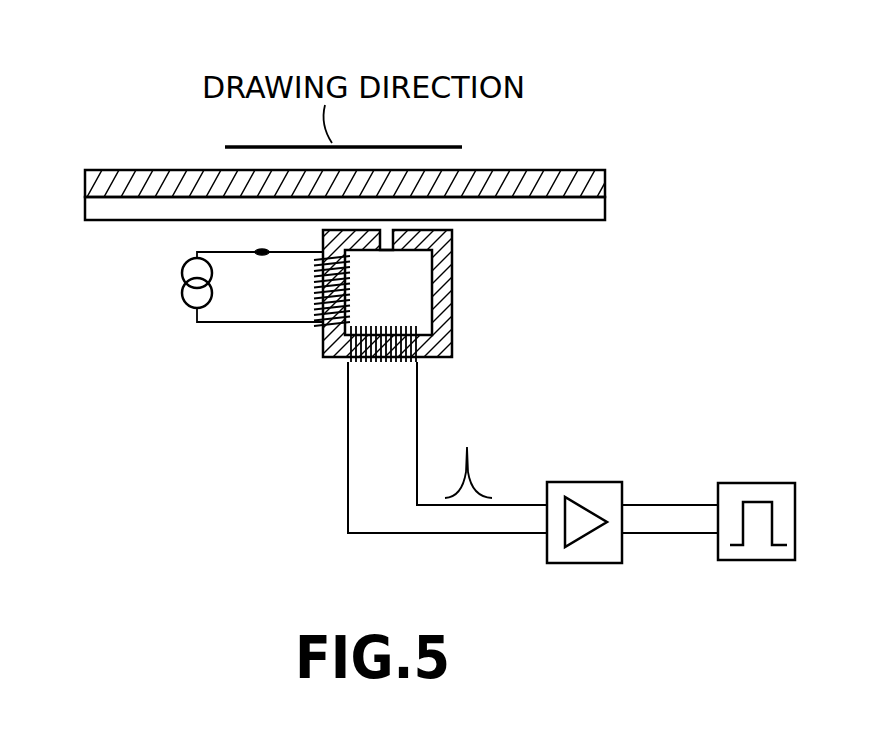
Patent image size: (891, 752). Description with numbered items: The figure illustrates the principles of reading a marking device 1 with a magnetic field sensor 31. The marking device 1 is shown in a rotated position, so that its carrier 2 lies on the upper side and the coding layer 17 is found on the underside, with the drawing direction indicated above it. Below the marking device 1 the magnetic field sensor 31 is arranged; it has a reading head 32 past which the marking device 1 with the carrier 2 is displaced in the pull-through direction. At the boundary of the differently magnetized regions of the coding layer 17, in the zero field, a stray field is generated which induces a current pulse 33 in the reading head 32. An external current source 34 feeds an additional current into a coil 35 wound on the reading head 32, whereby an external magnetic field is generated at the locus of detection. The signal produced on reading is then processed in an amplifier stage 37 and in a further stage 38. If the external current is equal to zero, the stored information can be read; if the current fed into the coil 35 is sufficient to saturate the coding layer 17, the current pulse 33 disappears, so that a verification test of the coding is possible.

The marking device 1 is at (597, 157).
The carrier 2 is at (607, 182).
The coding layer 17 is at (608, 208).
The magnetic field sensor 31 is at (615, 355).
The reading head 32 is at (452, 296).
The current pulse 33 is at (471, 473).
The external current source 34 is at (181, 310).
The coil 35 is at (317, 313).
The amplifier stage 37 is at (615, 493).
The further stage 38 is at (782, 490).